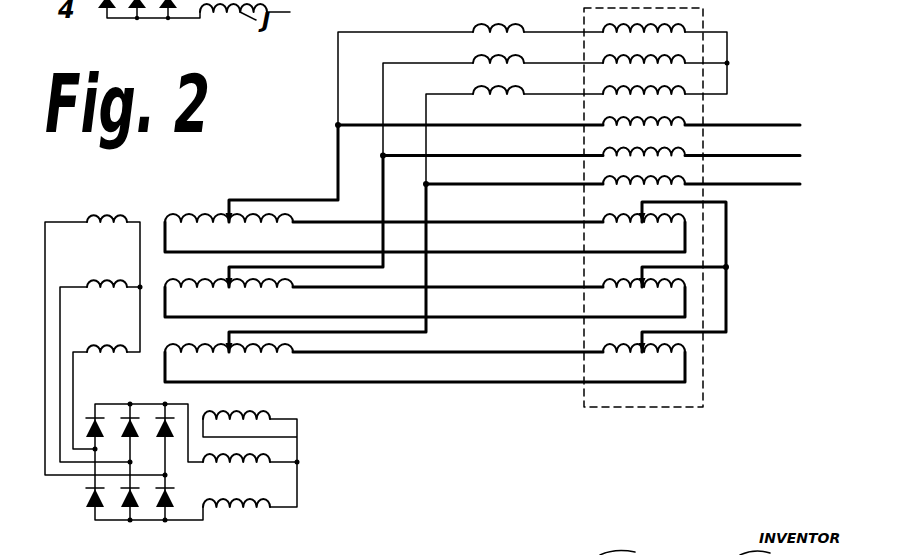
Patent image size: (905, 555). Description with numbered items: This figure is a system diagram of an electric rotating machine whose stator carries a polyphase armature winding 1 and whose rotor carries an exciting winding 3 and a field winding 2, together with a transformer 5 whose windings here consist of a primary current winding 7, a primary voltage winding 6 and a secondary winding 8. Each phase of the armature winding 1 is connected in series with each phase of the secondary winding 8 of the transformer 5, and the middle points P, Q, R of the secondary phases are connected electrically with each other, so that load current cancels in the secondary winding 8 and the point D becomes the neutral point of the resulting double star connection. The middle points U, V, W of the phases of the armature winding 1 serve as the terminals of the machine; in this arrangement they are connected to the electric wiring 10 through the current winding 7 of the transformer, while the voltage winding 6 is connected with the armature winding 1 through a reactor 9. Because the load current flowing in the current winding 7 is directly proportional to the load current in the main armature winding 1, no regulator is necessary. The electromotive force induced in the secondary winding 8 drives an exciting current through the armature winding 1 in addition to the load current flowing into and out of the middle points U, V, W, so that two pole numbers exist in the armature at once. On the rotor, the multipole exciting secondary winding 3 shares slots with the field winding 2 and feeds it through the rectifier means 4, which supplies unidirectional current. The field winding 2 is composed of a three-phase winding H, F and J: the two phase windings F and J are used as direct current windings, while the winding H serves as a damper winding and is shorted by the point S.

The armature winding 1 is at (425, 253).
The field winding 2 is at (274, 468).
The exciting winding 3 is at (105, 216).
The rectifier means 4 is at (90, 511).
The transformer 5 is at (572, 221).
The primary voltage winding 6 is at (685, 32).
The primary current winding 7 is at (685, 122).
The secondary winding 8 is at (651, 284).
The reactor 9 is at (498, 30).
The electric wiring 10 is at (735, 125).
The middle point U is at (227, 219).
The middle point V is at (226, 284).
The middle point W is at (222, 349).
The middle point P is at (640, 220).
The middle point Q is at (640, 286).
The middle point R is at (640, 351).
The neutral point D is at (726, 267).
The damper winding H is at (228, 415).
The direct current winding F is at (240, 465).
The direct current winding J is at (240, 519).
The shorting point S is at (317, 482).